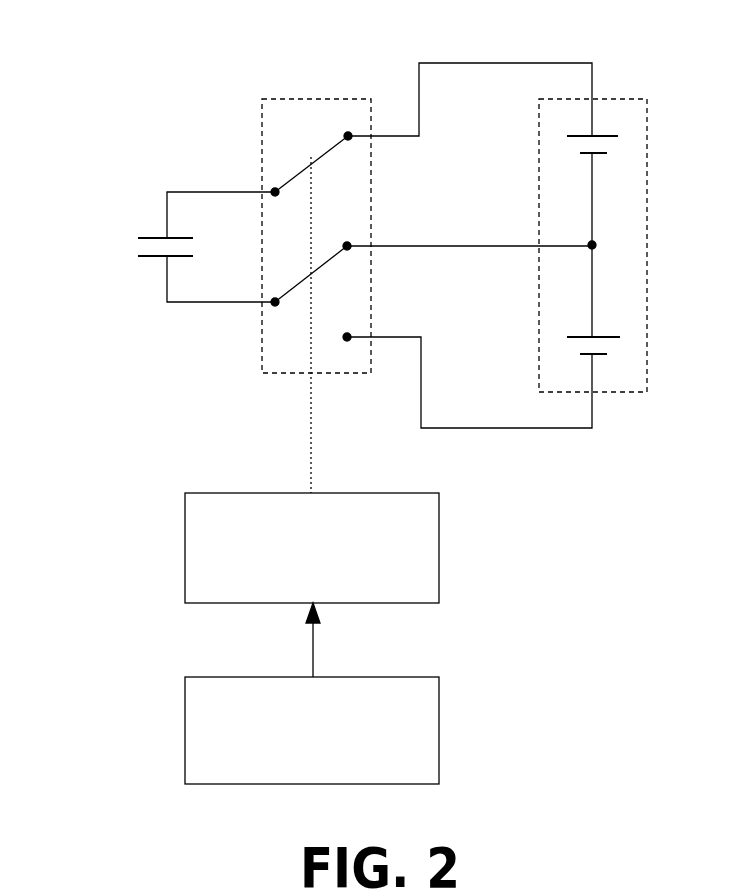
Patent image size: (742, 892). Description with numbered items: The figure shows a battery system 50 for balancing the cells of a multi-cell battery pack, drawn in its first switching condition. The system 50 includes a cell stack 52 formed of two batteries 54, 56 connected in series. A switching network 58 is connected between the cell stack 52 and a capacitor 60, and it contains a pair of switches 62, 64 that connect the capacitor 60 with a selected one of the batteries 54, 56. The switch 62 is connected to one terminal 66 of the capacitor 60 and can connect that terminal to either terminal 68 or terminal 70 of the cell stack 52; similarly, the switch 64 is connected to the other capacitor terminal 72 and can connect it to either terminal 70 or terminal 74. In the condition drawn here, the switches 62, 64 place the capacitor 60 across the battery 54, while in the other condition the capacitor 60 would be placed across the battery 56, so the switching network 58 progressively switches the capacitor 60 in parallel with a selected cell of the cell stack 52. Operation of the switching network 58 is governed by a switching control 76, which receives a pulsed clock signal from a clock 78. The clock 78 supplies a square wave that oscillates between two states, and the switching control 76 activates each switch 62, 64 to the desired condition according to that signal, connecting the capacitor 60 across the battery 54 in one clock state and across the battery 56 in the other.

The battery system 50 is at (243, 58).
The cell stack 52 is at (648, 170).
The battery 54 is at (607, 135).
The battery 56 is at (602, 336).
The switching network 58 is at (320, 98).
The capacitor 60 is at (158, 237).
The switch 62 is at (322, 157).
The switch 64 is at (290, 294).
The terminal 66 is at (190, 192).
The terminal 68 is at (387, 138).
The terminal 70 is at (375, 245).
The terminal 72 is at (202, 303).
The terminal 74 is at (377, 337).
The switching control 76 is at (440, 545).
The clock 78 is at (442, 737).